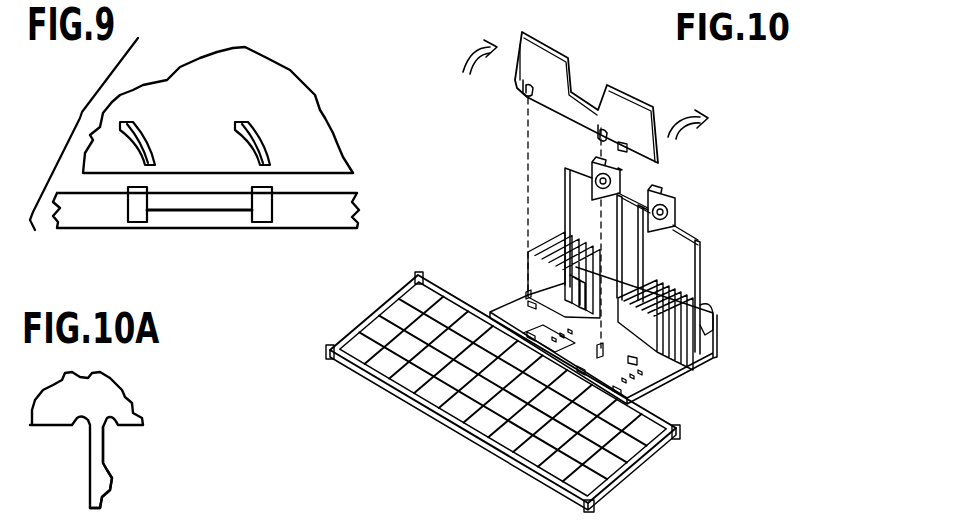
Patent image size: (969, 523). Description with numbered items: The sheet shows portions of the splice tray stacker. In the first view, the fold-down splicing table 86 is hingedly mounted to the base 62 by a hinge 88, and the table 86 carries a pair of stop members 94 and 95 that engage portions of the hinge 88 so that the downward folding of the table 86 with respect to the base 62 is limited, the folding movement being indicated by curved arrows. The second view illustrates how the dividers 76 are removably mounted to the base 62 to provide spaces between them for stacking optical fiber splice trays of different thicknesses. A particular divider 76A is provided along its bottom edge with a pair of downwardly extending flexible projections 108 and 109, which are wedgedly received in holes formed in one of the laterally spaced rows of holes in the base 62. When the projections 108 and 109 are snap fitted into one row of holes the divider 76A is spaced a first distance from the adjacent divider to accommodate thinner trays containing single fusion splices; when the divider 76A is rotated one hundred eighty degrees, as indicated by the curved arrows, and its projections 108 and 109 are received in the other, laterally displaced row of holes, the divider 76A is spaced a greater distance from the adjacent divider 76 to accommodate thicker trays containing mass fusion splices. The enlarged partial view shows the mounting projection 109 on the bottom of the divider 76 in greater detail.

In FIG. 9, the fold-down splicing table 86 is at (302, 88).
In FIG. 9, the stop member 95 is at (125, 137).
In FIG. 9, the stop member 94 is at (233, 138).
In FIG. 9, the base 62 is at (322, 223).
In FIG. 9, the hinge 88 is at (217, 210).
In FIG. 10A, the divider 76 is at (125, 397).
In FIG. 10, the divider 76A is at (627, 97).
In FIG. 10, the flexible projection 108 is at (532, 93).
In FIG. 10A, the flexible projection 109 is at (103, 500).
In FIG. 10, the flexible projection 109 is at (600, 142).